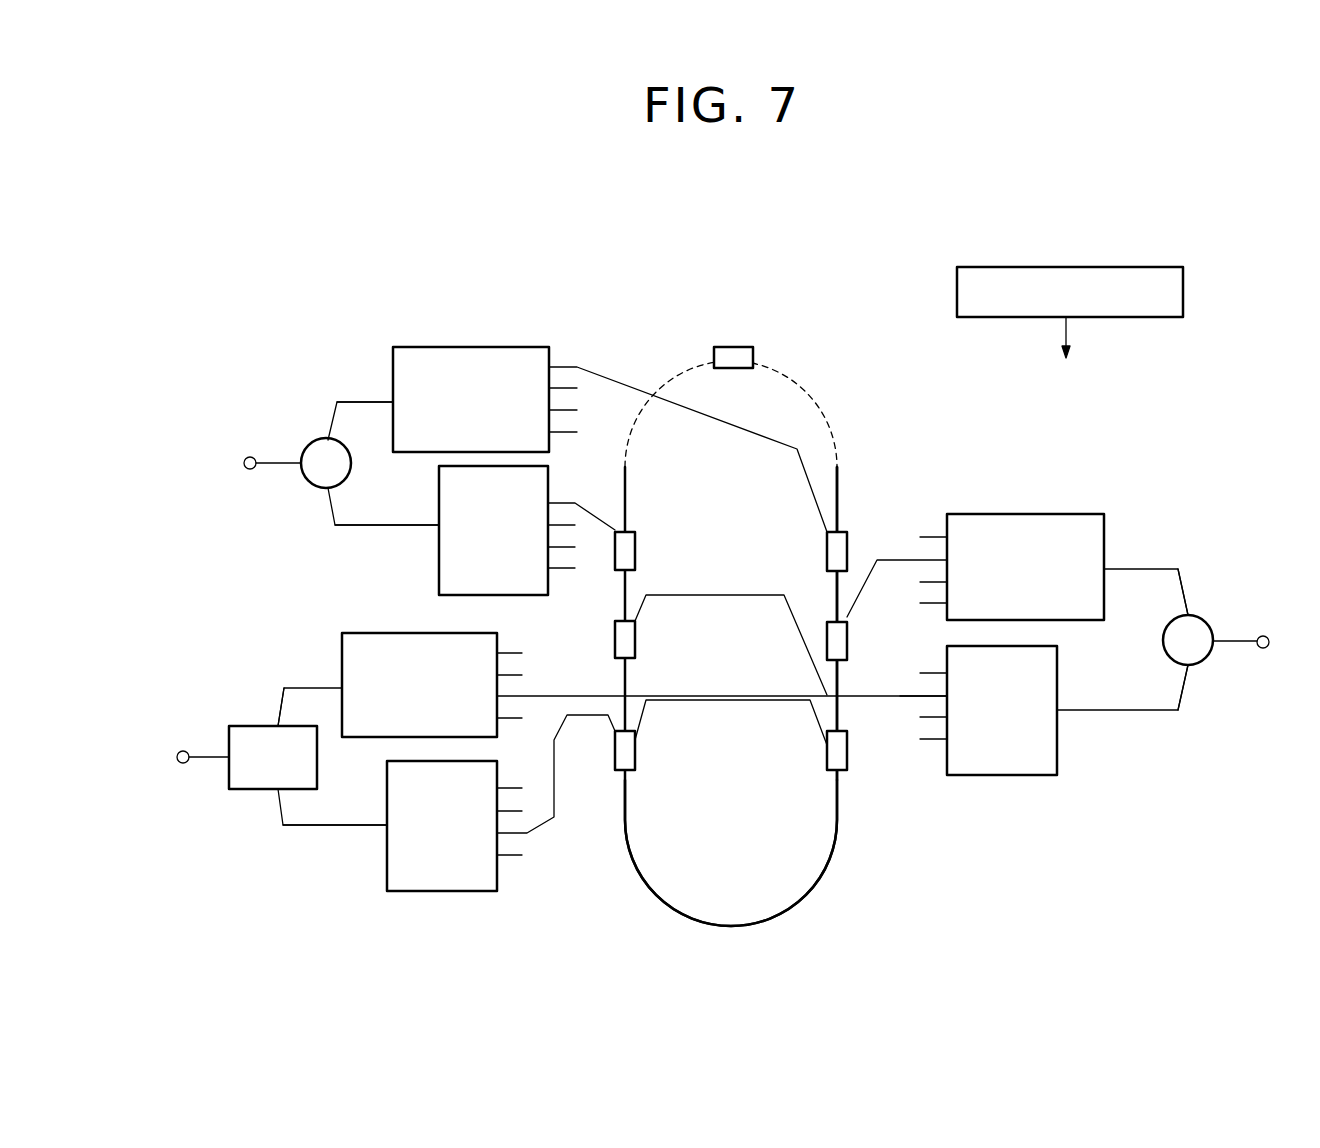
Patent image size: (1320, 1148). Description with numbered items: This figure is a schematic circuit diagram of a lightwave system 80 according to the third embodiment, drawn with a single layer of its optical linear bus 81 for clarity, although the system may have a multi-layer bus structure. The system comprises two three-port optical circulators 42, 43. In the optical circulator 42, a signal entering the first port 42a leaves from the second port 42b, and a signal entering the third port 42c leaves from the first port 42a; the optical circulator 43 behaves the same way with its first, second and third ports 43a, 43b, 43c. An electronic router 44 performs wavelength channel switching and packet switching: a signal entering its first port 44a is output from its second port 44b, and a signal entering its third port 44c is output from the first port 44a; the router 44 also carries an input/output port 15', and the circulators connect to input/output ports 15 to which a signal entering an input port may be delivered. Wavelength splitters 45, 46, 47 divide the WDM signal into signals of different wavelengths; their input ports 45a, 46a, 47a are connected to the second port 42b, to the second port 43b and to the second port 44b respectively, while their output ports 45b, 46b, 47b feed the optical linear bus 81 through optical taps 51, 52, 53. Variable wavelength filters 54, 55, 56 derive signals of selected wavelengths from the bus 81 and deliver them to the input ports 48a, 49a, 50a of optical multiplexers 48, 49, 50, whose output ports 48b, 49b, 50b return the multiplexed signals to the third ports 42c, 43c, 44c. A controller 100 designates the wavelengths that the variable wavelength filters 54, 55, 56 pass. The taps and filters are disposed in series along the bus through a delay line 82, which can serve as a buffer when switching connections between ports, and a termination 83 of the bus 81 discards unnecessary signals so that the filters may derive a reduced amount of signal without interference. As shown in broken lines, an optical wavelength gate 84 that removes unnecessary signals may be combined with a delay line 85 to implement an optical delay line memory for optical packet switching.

The input/output port 15 is at (749, 545).
The input/output port 15' is at (171, 722).
The optical circulator 42 is at (300, 445).
The first port 42a is at (278, 467).
The second port 42b is at (325, 505).
The third port 42c is at (330, 420).
The optical circulator 43 is at (1205, 615).
The first port 43a is at (1228, 645).
The second port 43b is at (1185, 690).
The third port 43c is at (1185, 595).
The electronic router 44 is at (250, 790).
The first port 44a is at (212, 760).
The second port 44b is at (280, 810).
The third port 44c is at (280, 712).
The wavelength splitter 45 is at (548, 595).
The input port 45a is at (365, 527).
The output port 45b is at (570, 500).
The wavelength splitter 46 is at (970, 775).
The input port 46a is at (1150, 712).
The output port 46b is at (900, 697).
The wavelength splitter 47 is at (440, 891).
The input port 47a is at (332, 827).
The output port 47b is at (520, 834).
The optical multiplexer 48 is at (476, 347).
The input port 48a is at (571, 365).
The output port 48b is at (372, 400).
The optical multiplexer 49 is at (1025, 517).
The input port 49a is at (900, 555).
The output port 49b is at (1130, 568).
The optical multiplexer 50 is at (340, 633).
The input port 50a is at (527, 696).
The output port 50b is at (308, 688).
The optical tap 51 is at (635, 548).
The optical tap 52 is at (635, 642).
The optical tap 53 is at (635, 752).
The variable wavelength filter 54 is at (848, 557).
The variable wavelength filter 55 is at (847, 643).
The variable wavelength filter 56 is at (827, 750).
The lightwave system 80 is at (362, 296).
The optical linear bus 81 is at (820, 892).
The delay line 82 is at (652, 898).
The termination 83 is at (840, 468).
The optical wavelength gate 84 is at (735, 347).
The delay line 85 is at (820, 392).
The controller 100 is at (1183, 290).